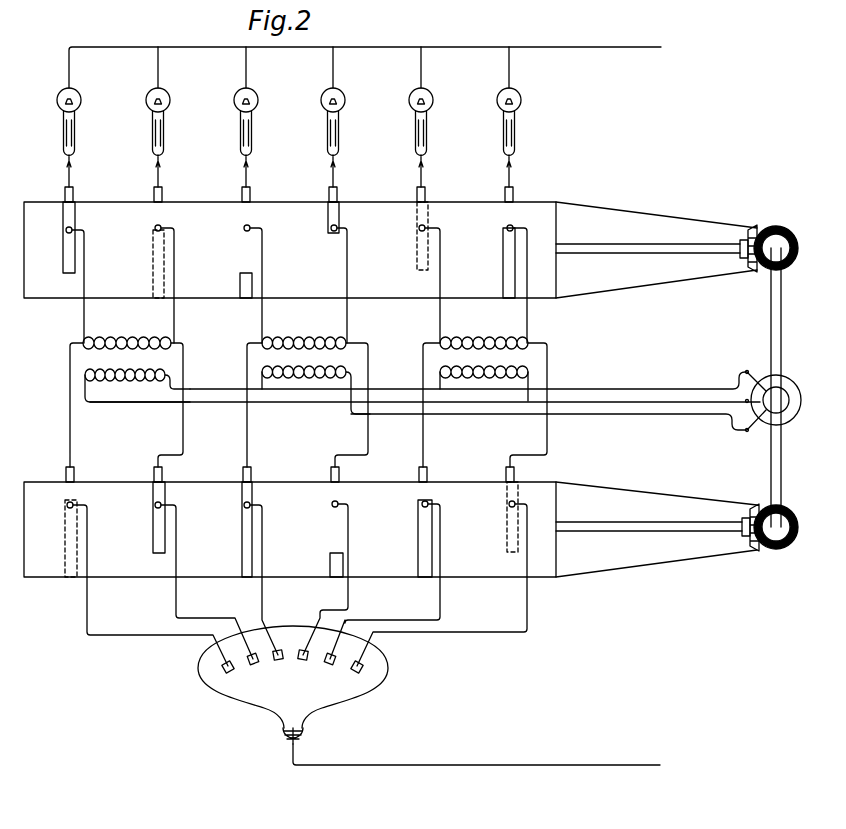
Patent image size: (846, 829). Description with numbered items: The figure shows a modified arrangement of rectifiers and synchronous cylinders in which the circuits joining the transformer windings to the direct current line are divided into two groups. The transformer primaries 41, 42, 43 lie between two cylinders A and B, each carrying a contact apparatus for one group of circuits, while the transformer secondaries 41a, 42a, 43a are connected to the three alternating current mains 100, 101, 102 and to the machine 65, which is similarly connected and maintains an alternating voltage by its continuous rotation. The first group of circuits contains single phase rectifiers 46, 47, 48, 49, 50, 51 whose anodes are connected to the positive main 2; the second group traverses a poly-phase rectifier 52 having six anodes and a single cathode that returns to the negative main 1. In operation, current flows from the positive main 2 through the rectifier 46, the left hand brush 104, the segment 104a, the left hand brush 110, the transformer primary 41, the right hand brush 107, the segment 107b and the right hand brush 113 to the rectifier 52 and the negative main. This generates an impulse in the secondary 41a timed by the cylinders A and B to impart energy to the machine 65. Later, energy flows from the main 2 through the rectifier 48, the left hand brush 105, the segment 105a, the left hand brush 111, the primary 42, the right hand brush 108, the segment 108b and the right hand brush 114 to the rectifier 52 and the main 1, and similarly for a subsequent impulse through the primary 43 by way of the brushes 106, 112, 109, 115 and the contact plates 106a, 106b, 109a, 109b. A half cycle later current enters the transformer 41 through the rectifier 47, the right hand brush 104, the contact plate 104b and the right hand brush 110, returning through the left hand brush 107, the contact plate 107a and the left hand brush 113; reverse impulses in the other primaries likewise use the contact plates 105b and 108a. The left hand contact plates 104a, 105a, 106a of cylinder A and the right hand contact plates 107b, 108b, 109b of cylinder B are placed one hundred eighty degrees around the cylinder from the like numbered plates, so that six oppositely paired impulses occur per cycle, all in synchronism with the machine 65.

The single phase rectifier 46 is at (51, 137).
The single phase rectifier 47 is at (140, 117).
The single phase rectifier 48 is at (228, 117).
The single phase rectifier 49 is at (316, 117).
The single phase rectifier 50 is at (404, 117).
The single phase rectifier 51 is at (493, 117).
The brush 104 is at (152, 190).
The brush 105 is at (327, 190).
The brush 106 is at (503, 190).
The brush 107 is at (152, 470).
The brush 108 is at (329, 470).
The brush 109 is at (504, 470).
The brush 110 is at (155, 229).
The brush 111 is at (331, 228).
The brush 112 is at (507, 227).
The brush 113 is at (155, 505).
The brush 114 is at (332, 504).
The brush 115 is at (509, 504).
The segment 104a is at (50, 237).
The contact plate 104b is at (152, 268).
The segment 105a is at (225, 285).
The contact plate 105b is at (331, 234).
The contact plate 106a is at (431, 248).
The contact plate 106b is at (505, 276).
The contact plate 107a is at (51, 538).
The segment 107b is at (152, 543).
The contact plate 108a is at (240, 498).
The segment 108b is at (330, 556).
The contact plate 109a is at (418, 551).
The contact plate 109b is at (507, 540).
The transformer primary 41 is at (126, 392).
The transformer primary 42 is at (307, 392).
The transformer primary 43 is at (485, 392).
The transformer secondary 41a is at (137, 385).
The transformer secondary 42a is at (260, 373).
The transformer secondary 43a is at (530, 370).
The alternating current main 100 is at (620, 386).
The alternating current main 101 is at (660, 399).
The alternating current main 102 is at (702, 411).
The machine 65 is at (803, 393).
The poly-phase rectifier 52 is at (429, 695).
The cylinder A is at (543, 223).
The cylinder B is at (548, 568).
The negative main 1 is at (660, 762).
The positive main 2 is at (373, 59).